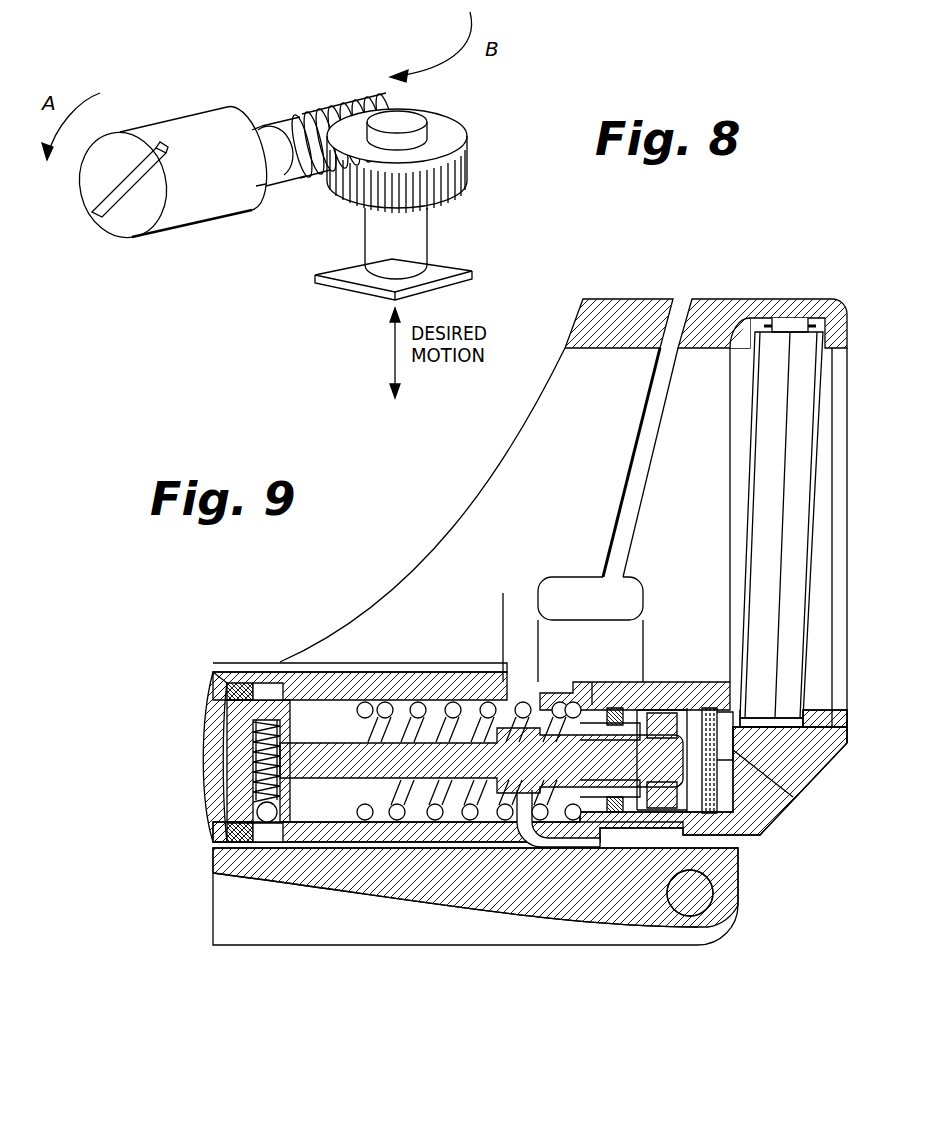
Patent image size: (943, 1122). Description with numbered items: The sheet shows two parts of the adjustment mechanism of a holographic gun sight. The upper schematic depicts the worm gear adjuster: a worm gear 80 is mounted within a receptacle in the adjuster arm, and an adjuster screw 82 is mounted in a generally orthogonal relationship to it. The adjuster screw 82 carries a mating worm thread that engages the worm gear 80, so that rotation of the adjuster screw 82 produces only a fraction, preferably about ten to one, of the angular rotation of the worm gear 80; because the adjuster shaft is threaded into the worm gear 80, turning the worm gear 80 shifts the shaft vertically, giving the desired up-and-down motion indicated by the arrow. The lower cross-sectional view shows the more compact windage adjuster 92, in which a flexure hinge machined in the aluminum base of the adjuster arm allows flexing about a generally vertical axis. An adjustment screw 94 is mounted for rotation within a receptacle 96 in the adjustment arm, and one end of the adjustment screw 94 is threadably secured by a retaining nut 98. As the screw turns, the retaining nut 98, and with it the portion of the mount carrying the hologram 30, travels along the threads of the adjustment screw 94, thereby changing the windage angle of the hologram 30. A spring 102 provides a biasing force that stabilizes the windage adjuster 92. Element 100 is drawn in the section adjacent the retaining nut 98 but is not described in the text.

In FIG. 9, the hologram 30 is at (785, 345).
In FIG. 8, the worm gear 80 is at (462, 122).
In FIG. 8, the adjuster screw 82 is at (190, 112).
In FIG. 9, the windage adjuster 92 is at (290, 653).
In FIG. 9, the adjustment screw 94 is at (238, 808).
In FIG. 9, the receptacle 96 is at (396, 695).
In FIG. 9, the retaining nut 98 is at (625, 715).
In FIG. 9, the diaphragm 100 is at (680, 710).
In FIG. 9, the spring 102 is at (456, 695).